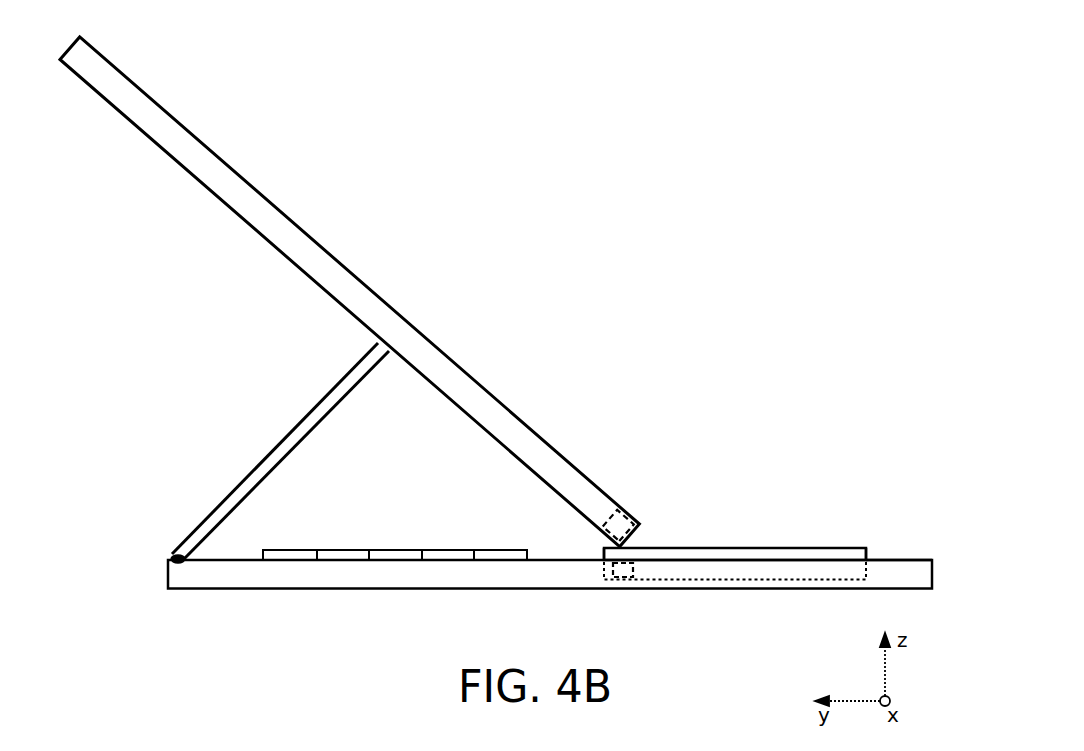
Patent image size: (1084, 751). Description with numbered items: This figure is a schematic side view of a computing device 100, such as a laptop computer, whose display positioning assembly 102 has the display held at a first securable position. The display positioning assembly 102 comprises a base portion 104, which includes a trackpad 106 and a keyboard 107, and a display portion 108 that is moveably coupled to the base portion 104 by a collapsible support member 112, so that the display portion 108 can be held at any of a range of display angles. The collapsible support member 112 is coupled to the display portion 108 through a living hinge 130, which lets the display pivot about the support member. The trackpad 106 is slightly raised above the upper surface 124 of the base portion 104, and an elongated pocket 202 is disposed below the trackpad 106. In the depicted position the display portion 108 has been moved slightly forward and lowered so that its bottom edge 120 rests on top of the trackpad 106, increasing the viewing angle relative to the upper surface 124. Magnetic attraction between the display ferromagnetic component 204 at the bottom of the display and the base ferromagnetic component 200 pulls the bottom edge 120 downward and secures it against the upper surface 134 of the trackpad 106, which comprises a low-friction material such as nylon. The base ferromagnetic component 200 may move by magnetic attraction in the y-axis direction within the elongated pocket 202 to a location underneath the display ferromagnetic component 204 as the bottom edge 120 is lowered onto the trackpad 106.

The computing device 100 is at (428, 206).
The display positioning assembly 102 is at (704, 458).
The base portion 104 is at (735, 590).
The trackpad 106 is at (866, 555).
The keyboard 107 is at (377, 550).
The display portion 108 is at (427, 338).
The collapsible support member 112 is at (293, 453).
The bottom edge 120 is at (632, 538).
The upper surface 124 is at (907, 560).
The living hinge 130 is at (370, 344).
The upper surface 134 is at (772, 548).
The base ferromagnetic component 200 is at (620, 580).
The elongated pocket 202 is at (866, 577).
The display ferromagnetic component 204 is at (637, 520).